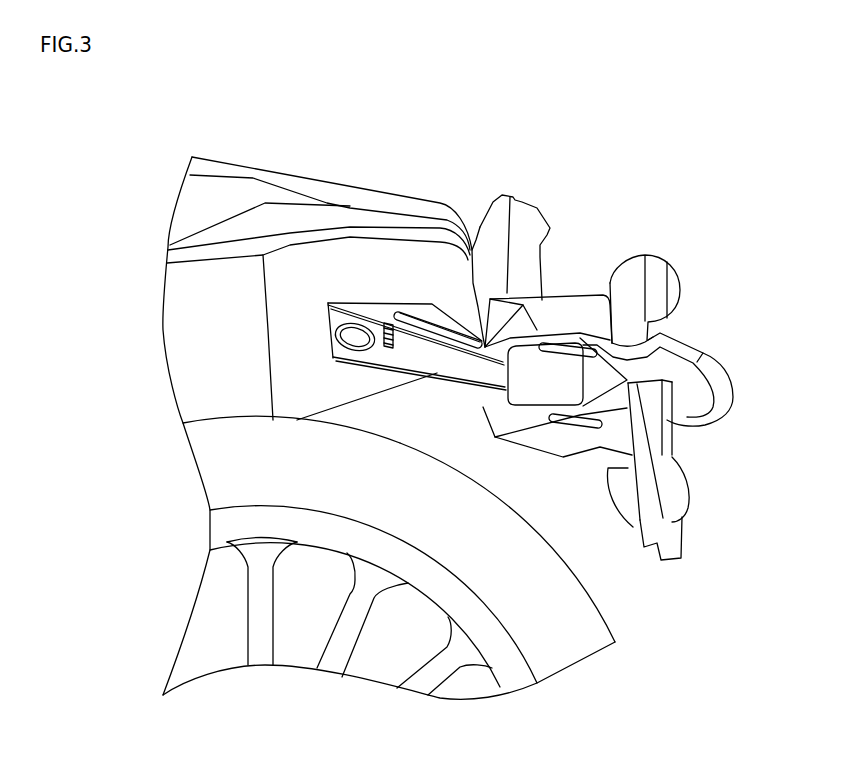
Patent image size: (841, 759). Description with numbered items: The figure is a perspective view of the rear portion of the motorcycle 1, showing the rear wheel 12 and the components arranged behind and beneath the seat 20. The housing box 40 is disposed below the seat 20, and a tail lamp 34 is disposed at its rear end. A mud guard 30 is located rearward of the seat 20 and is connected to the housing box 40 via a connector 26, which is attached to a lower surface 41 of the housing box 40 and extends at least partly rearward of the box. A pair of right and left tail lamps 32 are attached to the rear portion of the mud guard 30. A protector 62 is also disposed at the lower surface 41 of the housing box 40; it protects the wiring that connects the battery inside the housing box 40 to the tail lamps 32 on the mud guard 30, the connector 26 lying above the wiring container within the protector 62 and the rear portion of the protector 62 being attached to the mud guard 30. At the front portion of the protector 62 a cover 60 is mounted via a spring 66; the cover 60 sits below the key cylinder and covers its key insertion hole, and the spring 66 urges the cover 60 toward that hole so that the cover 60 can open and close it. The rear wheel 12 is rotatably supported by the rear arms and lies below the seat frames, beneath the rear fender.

The vehicle body structure 1 is at (635, 180).
The rear wheel 12 is at (607, 618).
The seat 20 is at (340, 178).
The connector 26 is at (459, 318).
The mud guard 30 is at (698, 348).
The tail lamps 32 is at (657, 260).
The tail lamp 34 is at (505, 193).
The housing box 40 is at (198, 277).
The lower surface 41 is at (302, 357).
The cover 60 is at (340, 360).
The protector 62 is at (423, 337).
The spring 66 is at (395, 340).